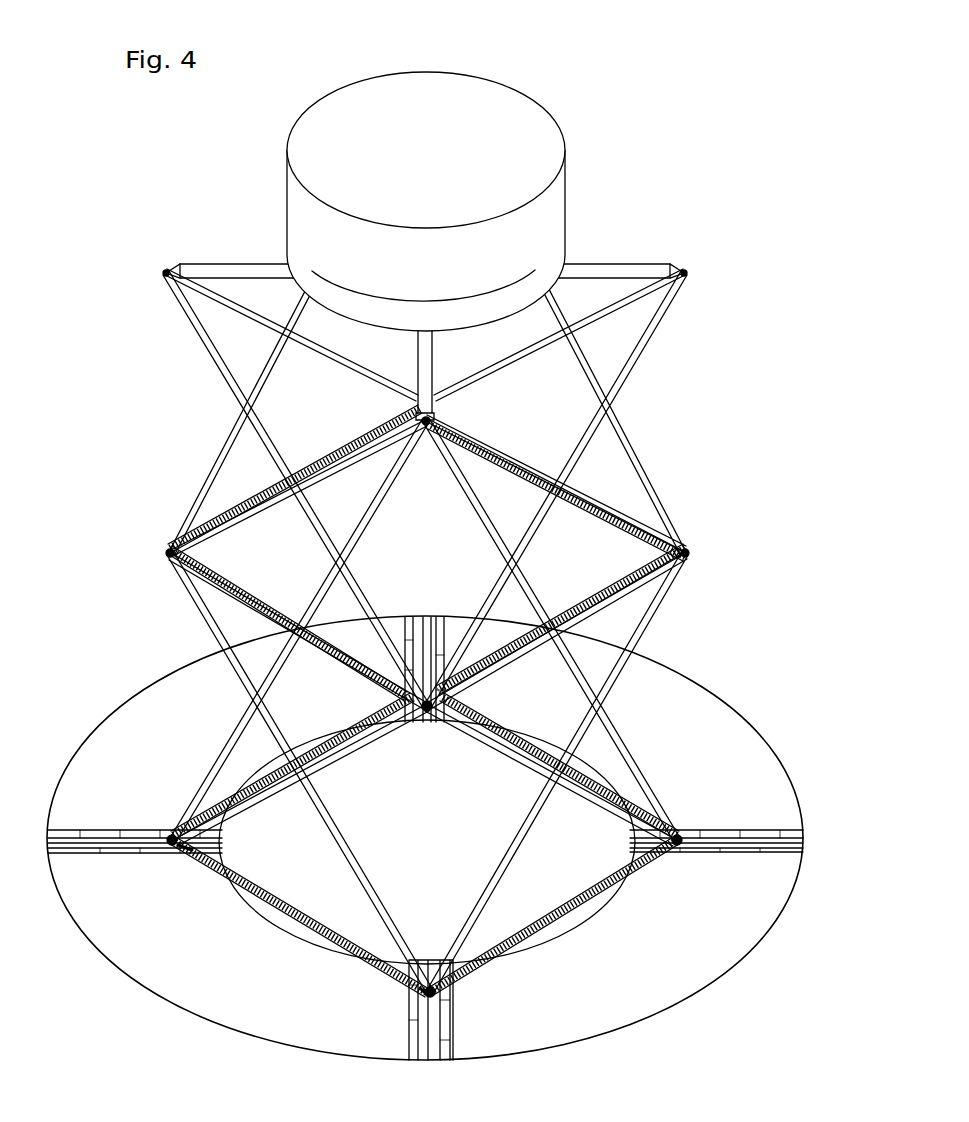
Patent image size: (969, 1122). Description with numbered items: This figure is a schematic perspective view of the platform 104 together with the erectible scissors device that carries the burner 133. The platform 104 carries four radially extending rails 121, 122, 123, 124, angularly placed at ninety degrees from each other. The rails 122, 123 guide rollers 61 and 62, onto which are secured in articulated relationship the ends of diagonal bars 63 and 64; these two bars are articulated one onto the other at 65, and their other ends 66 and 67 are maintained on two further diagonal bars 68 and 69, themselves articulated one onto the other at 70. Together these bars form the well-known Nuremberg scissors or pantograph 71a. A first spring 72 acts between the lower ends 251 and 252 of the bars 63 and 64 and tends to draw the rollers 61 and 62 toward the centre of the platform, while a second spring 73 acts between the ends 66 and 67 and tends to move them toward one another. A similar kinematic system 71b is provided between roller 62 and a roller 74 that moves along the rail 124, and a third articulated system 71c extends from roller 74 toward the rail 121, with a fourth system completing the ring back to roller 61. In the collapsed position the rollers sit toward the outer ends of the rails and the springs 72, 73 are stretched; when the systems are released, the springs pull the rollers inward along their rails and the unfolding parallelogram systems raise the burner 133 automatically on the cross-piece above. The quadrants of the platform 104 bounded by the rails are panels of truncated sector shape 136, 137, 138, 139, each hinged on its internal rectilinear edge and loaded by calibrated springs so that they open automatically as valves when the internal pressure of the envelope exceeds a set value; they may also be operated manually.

The burner 133 is at (553, 205).
The platform 104 is at (683, 669).
The rail 121 is at (430, 635).
The rail 122 is at (130, 845).
The rail 123 is at (445, 1030).
The rail 124 is at (738, 848).
The roller 61 is at (172, 850).
The roller 62 is at (440, 995).
The end of diagonal bar 67 is at (425, 712).
The roller 74 is at (679, 850).
The end of diagonal bar 66 is at (168, 560).
The lower end of bar 251 is at (185, 852).
The lower end of bar 252 is at (420, 990).
The diagonal bar 63 is at (250, 805).
The diagonal bar 64 is at (352, 858).
The articulation 65 is at (303, 768).
The diagonal bar 68 is at (247, 510).
The diagonal bar 69 is at (323, 537).
The articulation 70 is at (305, 490).
The spring 72 is at (303, 916).
The second spring 73 is at (278, 617).
The pantograph 71a is at (340, 703).
The kinematic system 71b is at (562, 703).
The articulated system 71c is at (612, 563).
The panel 136 is at (168, 747).
The panel 137 is at (710, 747).
The panel 138 is at (223, 955).
The panel 139 is at (660, 955).